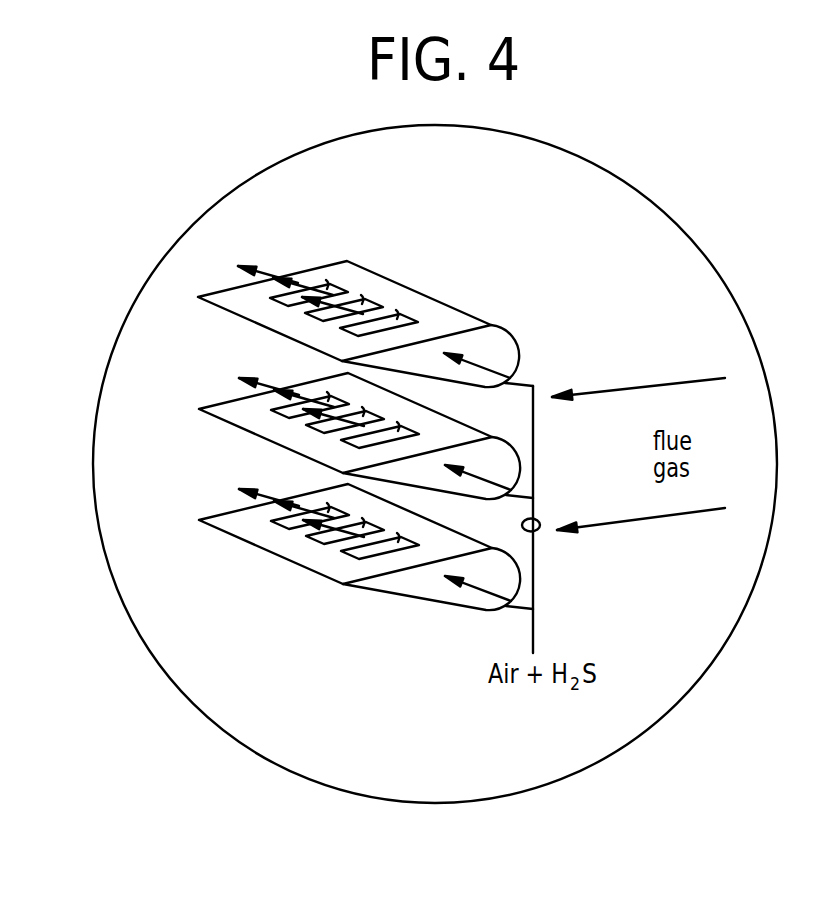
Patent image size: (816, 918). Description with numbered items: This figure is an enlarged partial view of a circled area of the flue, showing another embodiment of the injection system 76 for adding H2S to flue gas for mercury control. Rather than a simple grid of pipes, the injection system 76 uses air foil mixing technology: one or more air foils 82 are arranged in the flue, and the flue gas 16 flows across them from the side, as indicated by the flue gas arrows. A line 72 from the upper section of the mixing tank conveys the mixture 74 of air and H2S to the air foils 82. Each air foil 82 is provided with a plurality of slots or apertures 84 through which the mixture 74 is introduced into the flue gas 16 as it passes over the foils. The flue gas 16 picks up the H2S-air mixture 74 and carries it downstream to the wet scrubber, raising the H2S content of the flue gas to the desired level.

The flue gas 16 is at (645, 382).
The line 72 is at (540, 529).
The mixture of air and H2S 74 is at (258, 265).
The injection system 76 is at (566, 151).
The air foils 82 is at (503, 350).
The slots or apertures 84 is at (398, 317).